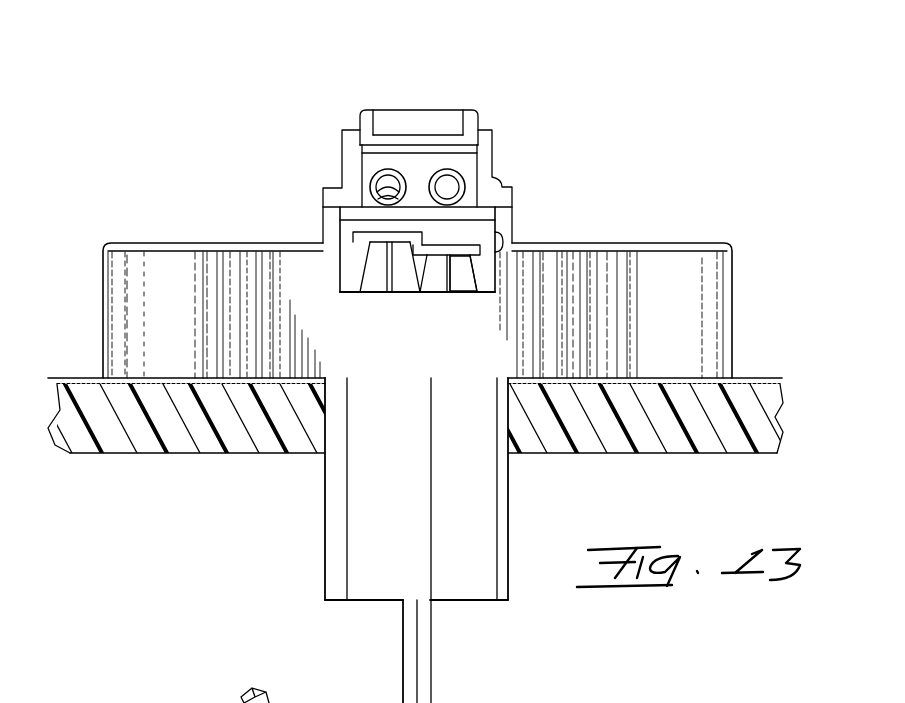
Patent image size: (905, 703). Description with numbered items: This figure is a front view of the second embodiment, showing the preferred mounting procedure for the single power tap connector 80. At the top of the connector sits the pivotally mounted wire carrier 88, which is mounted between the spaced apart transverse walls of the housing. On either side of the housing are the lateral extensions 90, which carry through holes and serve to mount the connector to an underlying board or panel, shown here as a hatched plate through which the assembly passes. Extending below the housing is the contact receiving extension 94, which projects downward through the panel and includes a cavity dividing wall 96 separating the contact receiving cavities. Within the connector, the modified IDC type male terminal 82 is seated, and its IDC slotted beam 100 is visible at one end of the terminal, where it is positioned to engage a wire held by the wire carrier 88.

The single power tap connector 80 is at (583, 228).
The male terminal 82 is at (418, 300).
The wire carrier 88 is at (412, 95).
The lateral extensions 90 is at (130, 300).
The contact receiving extension 94 is at (360, 532).
The cavity dividing wall 96 is at (407, 630).
The IDC slotted beam 100 is at (465, 282).